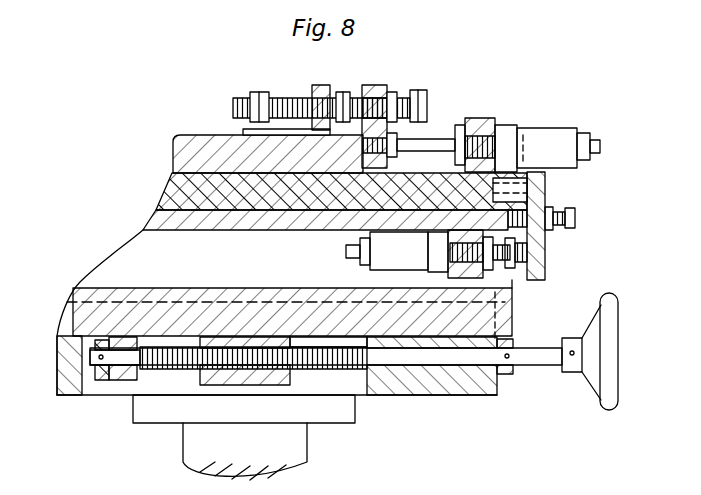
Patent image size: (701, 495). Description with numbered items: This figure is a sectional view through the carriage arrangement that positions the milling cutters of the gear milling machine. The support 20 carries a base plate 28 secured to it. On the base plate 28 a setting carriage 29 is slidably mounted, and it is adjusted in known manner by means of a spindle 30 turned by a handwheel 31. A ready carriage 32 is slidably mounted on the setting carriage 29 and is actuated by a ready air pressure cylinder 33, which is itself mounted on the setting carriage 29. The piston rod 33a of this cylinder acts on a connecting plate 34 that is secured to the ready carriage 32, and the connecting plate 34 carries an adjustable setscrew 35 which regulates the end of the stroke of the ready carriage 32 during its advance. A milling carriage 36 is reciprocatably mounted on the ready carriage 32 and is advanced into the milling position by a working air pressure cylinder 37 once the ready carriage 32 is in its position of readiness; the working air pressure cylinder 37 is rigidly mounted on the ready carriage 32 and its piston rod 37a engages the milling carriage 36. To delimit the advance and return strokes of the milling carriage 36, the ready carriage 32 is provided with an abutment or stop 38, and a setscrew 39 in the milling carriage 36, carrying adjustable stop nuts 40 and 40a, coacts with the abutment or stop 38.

The support 20 is at (296, 447).
The base plate 28 is at (62, 360).
The setting carriage 29 is at (117, 262).
The spindle 30 is at (318, 362).
The handwheel 31 is at (616, 335).
The ready carriage 32 is at (175, 190).
The ready air pressure cylinder 33 is at (380, 254).
The piston rod 33a is at (510, 265).
The connecting plate 34 is at (545, 205).
The adjustable setscrew 35 is at (578, 218).
The milling carriage 36 is at (207, 133).
The working air pressure cylinder 37 is at (550, 135).
The piston rod 37a is at (420, 145).
The abutment or stop 38 is at (321, 88).
The setscrew 39 is at (375, 95).
The adjustable stop nut 40 is at (262, 100).
The adjustable stop nut 40a is at (342, 95).